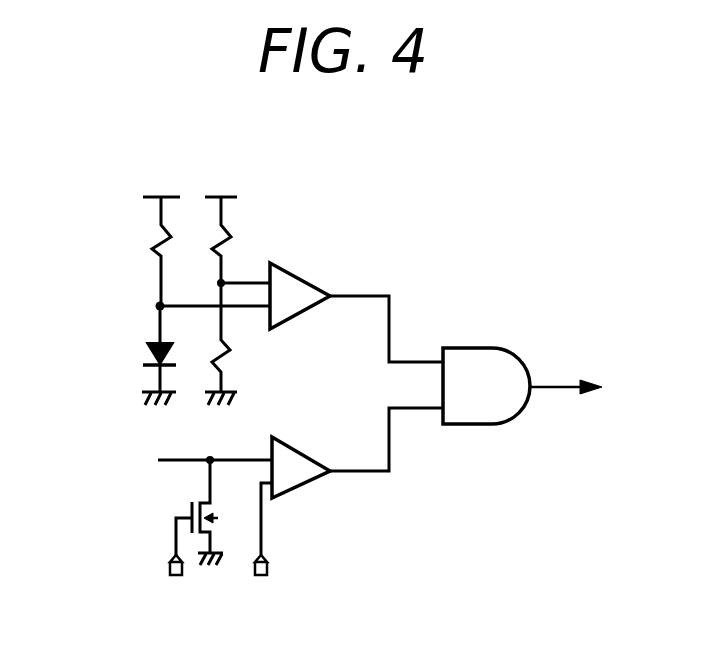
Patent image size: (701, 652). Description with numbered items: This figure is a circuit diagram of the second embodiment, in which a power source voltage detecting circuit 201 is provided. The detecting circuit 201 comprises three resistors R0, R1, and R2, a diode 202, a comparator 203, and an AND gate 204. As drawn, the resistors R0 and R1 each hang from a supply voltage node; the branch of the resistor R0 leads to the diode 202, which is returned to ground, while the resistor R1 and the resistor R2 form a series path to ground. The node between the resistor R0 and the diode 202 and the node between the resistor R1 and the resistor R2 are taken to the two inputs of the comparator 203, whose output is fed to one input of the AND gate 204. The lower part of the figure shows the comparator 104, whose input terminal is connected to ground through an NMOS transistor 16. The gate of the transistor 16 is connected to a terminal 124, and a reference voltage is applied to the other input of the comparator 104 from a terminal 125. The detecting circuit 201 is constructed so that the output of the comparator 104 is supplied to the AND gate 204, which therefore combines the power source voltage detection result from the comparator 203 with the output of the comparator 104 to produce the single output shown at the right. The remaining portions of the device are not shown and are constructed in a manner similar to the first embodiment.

The power source voltage detecting circuit 201 is at (375, 137).
The diode 202 is at (147, 357).
The comparator 203 is at (305, 281).
The AND gate 204 is at (492, 348).
The comparator 104 is at (308, 453).
The NMOS transistor 16 is at (192, 502).
The terminal 124 is at (169, 568).
The terminal 125 is at (268, 570).
The resistor R0 is at (144, 251).
The resistor R1 is at (240, 240).
The resistor R2 is at (238, 344).